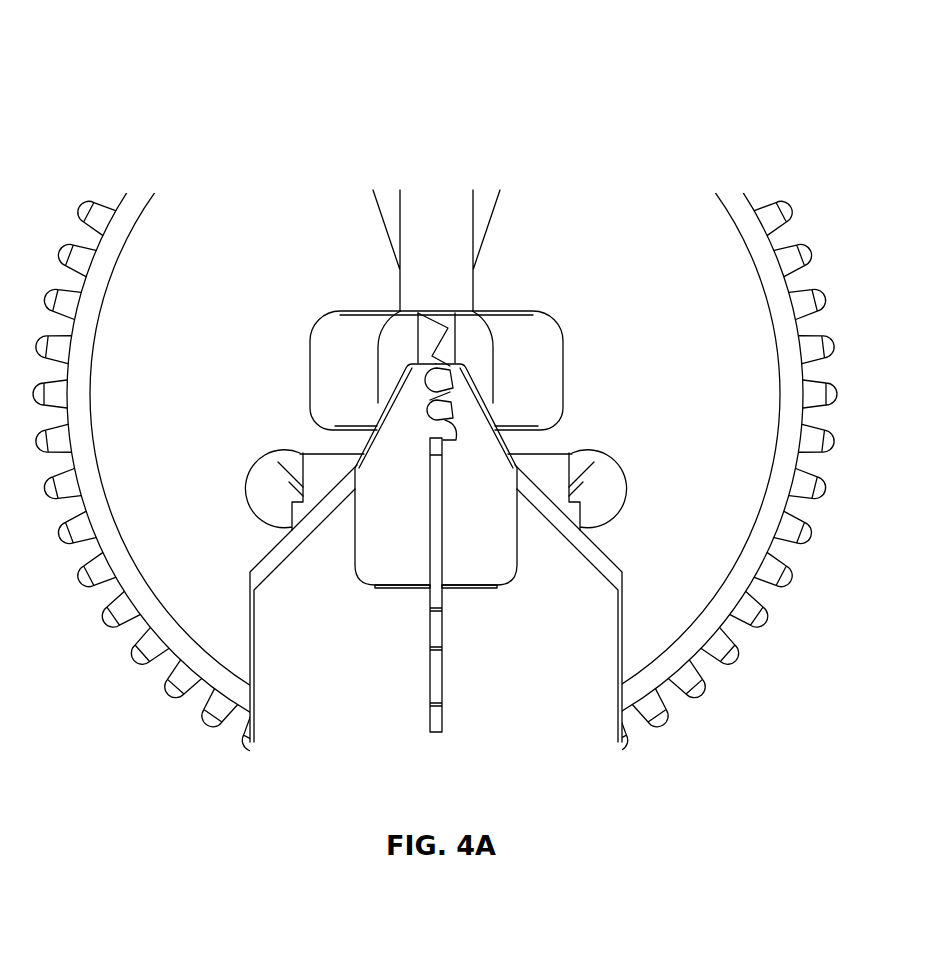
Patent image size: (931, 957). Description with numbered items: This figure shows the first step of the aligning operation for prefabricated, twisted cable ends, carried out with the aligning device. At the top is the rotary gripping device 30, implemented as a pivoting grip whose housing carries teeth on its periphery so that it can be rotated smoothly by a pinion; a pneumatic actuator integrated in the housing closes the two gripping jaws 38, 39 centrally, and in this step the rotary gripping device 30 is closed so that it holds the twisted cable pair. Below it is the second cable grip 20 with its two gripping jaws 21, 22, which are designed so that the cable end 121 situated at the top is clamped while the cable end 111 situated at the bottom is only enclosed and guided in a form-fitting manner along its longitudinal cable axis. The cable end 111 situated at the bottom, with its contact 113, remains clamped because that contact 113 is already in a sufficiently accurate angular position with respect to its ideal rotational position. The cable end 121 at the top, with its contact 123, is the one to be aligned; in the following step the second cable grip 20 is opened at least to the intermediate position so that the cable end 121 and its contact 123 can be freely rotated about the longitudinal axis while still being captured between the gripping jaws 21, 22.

The second cable grip 20 is at (266, 613).
The gripping jaw 21 is at (395, 567).
The gripping jaw 22 is at (500, 543).
The rotary gripping device 30 is at (436, 222).
The gripping jaw 38 is at (483, 347).
The gripping jaw 39 is at (370, 347).
The cable end 111 is at (544, 339).
The contact 113 is at (447, 407).
The cable end 121 is at (322, 280).
The contact 123 is at (430, 382).